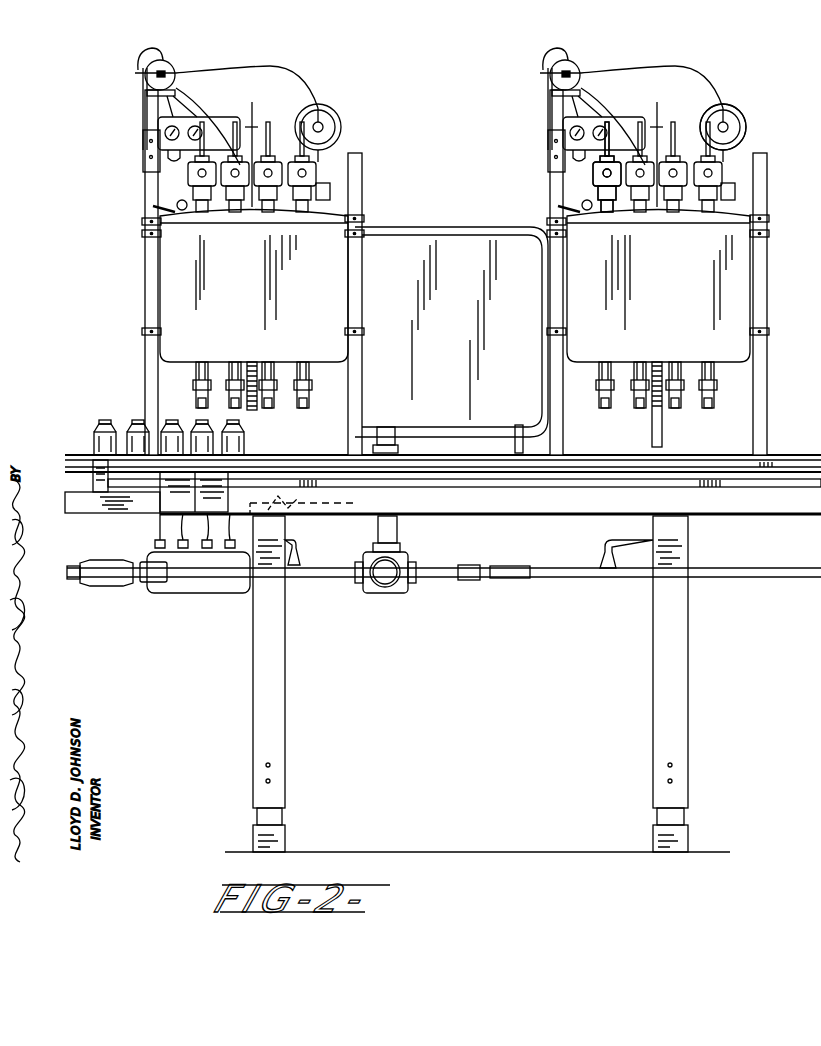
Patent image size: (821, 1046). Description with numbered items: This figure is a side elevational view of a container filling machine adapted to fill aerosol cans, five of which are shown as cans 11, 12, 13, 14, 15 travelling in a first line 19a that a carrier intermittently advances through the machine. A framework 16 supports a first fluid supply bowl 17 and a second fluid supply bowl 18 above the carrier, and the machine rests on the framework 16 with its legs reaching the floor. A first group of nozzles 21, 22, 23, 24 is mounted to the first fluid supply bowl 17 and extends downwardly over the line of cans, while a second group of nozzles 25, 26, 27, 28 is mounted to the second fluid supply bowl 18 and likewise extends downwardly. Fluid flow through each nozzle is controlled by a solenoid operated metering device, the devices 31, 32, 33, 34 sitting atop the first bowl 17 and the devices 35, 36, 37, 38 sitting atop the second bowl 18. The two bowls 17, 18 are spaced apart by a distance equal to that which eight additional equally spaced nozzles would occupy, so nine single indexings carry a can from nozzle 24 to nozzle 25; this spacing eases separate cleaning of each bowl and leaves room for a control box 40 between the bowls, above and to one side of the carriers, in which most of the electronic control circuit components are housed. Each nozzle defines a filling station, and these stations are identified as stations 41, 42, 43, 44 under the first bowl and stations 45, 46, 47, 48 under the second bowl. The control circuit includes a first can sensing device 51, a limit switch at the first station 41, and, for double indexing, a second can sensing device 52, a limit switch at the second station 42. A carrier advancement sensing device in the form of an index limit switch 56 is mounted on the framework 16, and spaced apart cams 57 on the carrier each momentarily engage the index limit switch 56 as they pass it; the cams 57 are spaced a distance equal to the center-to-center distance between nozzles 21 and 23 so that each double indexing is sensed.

The aerosol can 11 is at (236, 446).
The aerosol can 12 is at (203, 438).
The aerosol can 13 is at (140, 443).
The aerosol can 14 is at (127, 432).
The aerosol can 15 is at (102, 447).
The framework 16 is at (285, 748).
The first fluid supply bowl 17 is at (330, 298).
The second fluid supply bowl 18 is at (685, 293).
The first line of cans 19a is at (90, 395).
The nozzle 21 is at (200, 362).
The nozzle 22 is at (246, 350).
The nozzle 23 is at (288, 350).
The nozzle 24 is at (327, 350).
The nozzle 25 is at (604, 362).
The nozzle 26 is at (640, 362).
The nozzle 27 is at (676, 366).
The nozzle 28 is at (724, 356).
The solenoid operated metering device 31 is at (190, 172).
The solenoid operated metering device 32 is at (241, 168).
The solenoid operated metering device 33 is at (330, 104).
The solenoid operated metering device 34 is at (312, 170).
The solenoid operated metering device 35 is at (607, 170).
The solenoid operated metering device 36 is at (641, 170).
The solenoid operated metering device 37 is at (722, 99).
The solenoid operated metering device 38 is at (717, 168).
The control box 40 is at (486, 268).
The first filling station 41 is at (186, 396).
The second filling station 42 is at (216, 396).
The filling station 43 is at (283, 398).
The filling station 44 is at (321, 404).
The filling station 45 is at (590, 400).
The filling station 46 is at (624, 398).
The filling station 47 is at (688, 397).
The filling station 48 is at (722, 397).
The first can sensing device 51 is at (153, 515).
The second can sensing device 52 is at (238, 480).
The index limit switch 56 is at (296, 508).
The cam 57 is at (353, 503).